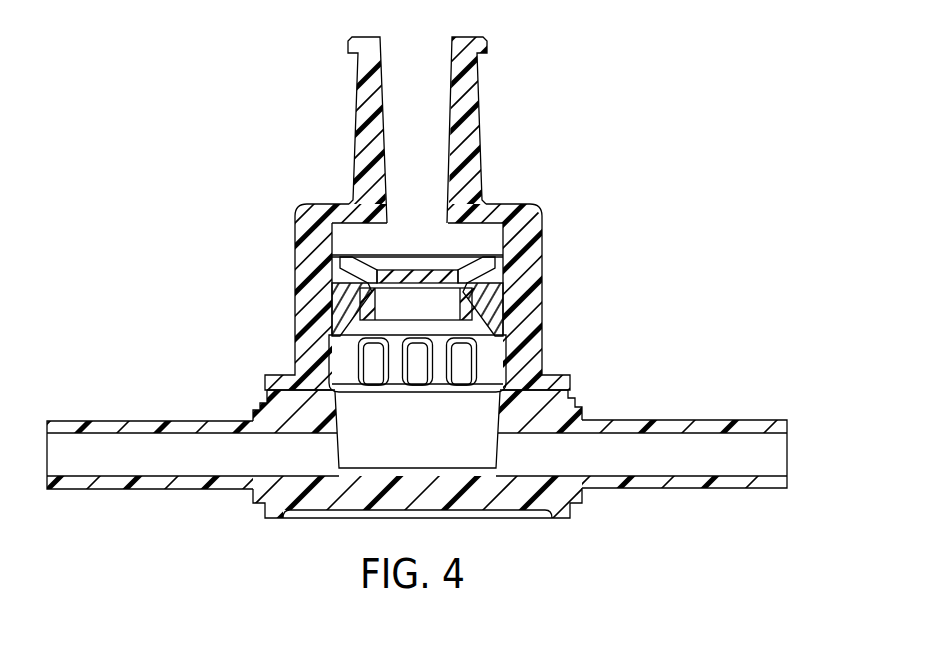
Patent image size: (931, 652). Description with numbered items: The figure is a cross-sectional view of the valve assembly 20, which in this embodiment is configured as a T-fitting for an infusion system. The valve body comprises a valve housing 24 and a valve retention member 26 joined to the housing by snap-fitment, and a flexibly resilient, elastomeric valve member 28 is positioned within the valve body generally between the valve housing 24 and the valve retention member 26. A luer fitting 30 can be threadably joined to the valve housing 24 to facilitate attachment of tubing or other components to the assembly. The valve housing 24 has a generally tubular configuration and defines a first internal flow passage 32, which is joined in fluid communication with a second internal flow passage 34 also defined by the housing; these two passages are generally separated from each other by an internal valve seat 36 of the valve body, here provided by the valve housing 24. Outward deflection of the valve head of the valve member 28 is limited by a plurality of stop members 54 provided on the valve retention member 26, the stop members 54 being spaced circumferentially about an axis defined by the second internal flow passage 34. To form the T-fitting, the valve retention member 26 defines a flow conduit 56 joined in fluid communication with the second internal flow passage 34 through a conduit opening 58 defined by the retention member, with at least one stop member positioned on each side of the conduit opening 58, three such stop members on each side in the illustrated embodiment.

The valve assembly 20 is at (465, 326).
The valve housing 24 is at (558, 306).
The valve retention member 26 is at (465, 326).
The valve member 28 is at (308, 283).
The luer fitting 30 is at (474, 124).
The first internal flow passage 32 is at (353, 242).
The second internal flow passage 34 is at (374, 390).
The internal valve seat 36 is at (475, 253).
The stop members 54 is at (428, 368).
The flow conduit 56 is at (217, 435).
The conduit opening 58 is at (338, 410).